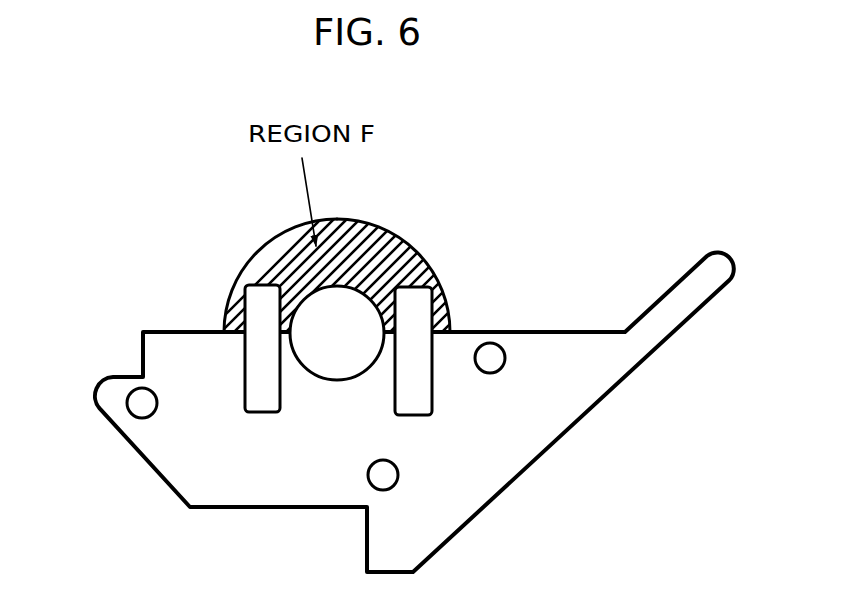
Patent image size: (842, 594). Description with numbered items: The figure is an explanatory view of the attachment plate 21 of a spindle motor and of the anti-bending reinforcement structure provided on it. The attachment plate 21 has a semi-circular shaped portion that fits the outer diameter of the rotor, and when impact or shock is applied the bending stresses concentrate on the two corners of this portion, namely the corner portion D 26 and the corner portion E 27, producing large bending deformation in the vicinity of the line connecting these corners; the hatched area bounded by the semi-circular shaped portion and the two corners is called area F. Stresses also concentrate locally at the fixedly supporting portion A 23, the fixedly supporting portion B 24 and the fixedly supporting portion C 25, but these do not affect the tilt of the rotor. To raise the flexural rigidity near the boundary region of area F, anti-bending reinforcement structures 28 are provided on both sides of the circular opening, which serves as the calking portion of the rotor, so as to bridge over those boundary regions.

The attachment plate 21 is at (543, 397).
The fixedly supporting portion A 23 is at (499, 356).
The fixedly supporting portion B 24 is at (129, 400).
The fixedly supporting portion C 25 is at (386, 473).
The corner portion D 26 is at (454, 327).
The corner portion E 27 is at (221, 327).
The anti-bending reinforcement structures 28 is at (258, 364).